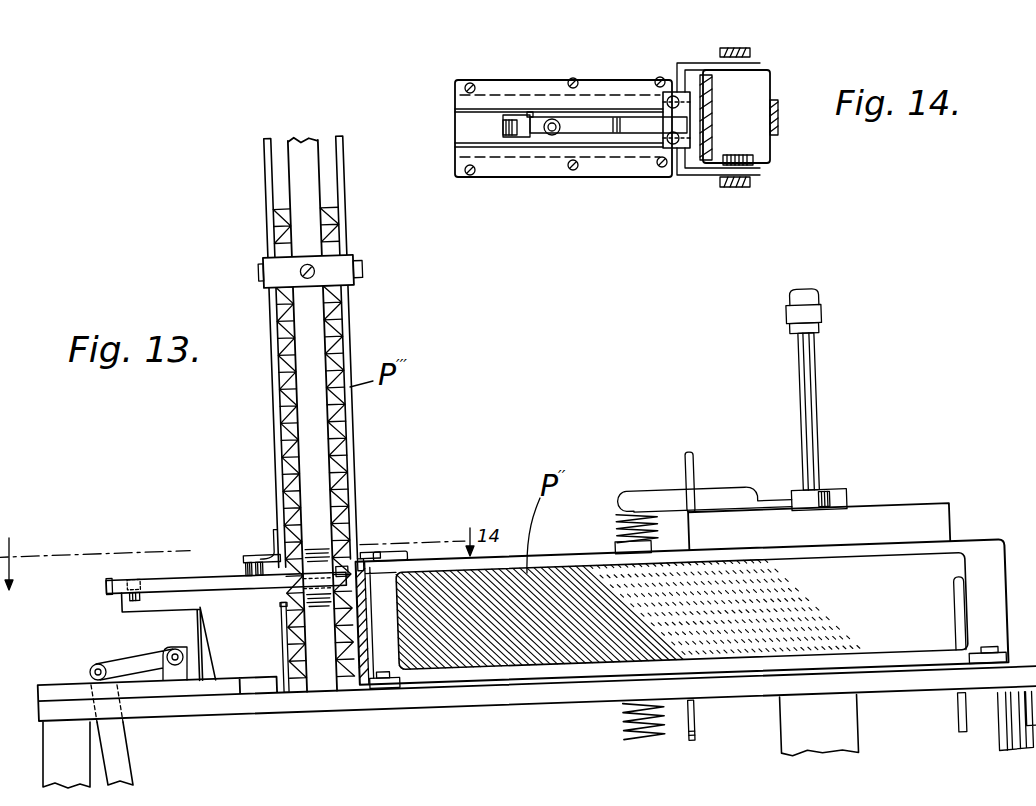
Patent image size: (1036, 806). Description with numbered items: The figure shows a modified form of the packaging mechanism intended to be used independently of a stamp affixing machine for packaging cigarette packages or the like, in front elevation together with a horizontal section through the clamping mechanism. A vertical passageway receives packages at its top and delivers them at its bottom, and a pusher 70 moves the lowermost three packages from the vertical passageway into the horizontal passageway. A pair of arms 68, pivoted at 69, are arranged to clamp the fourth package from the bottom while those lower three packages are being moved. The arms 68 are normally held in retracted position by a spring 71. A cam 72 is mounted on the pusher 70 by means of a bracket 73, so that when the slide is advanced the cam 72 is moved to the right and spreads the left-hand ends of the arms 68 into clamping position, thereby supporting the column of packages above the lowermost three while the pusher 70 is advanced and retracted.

In FIG. 13, the arms 68 is at (230, 578).
In FIG. 14, the arms 68 is at (613, 112).
In FIG. 13, the pivot 69 is at (254, 561).
In FIG. 14, the pivot 69 is at (670, 100).
In FIG. 13, the pusher 70 is at (285, 638).
In FIG. 14, the spring 71 is at (523, 137).
In FIG. 13, the cam 72 is at (135, 569).
In FIG. 14, the cam 72 is at (553, 130).
In FIG. 13, the bracket 73 is at (163, 598).